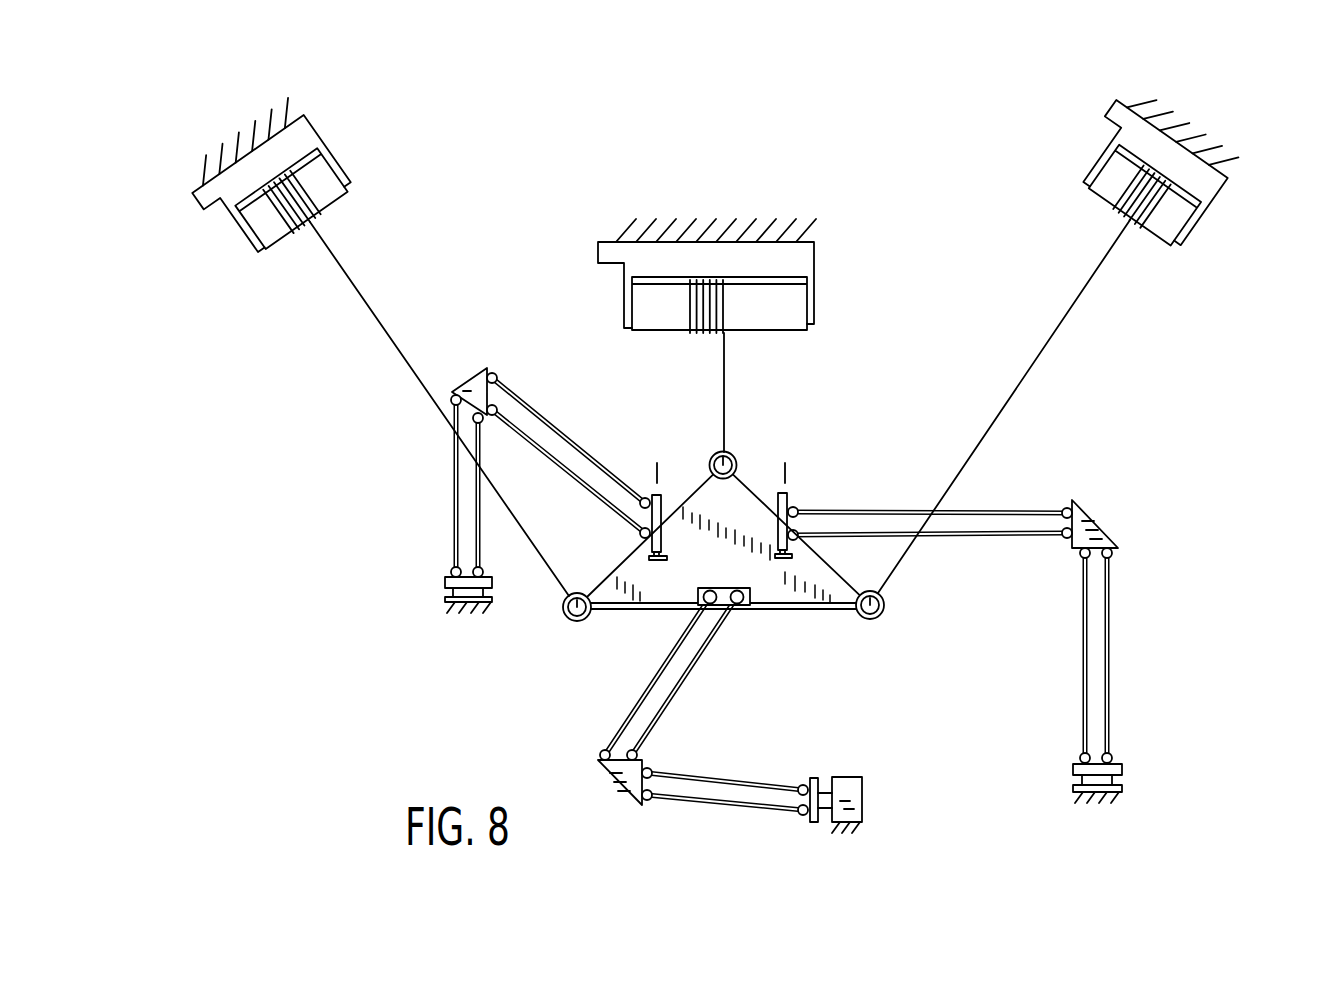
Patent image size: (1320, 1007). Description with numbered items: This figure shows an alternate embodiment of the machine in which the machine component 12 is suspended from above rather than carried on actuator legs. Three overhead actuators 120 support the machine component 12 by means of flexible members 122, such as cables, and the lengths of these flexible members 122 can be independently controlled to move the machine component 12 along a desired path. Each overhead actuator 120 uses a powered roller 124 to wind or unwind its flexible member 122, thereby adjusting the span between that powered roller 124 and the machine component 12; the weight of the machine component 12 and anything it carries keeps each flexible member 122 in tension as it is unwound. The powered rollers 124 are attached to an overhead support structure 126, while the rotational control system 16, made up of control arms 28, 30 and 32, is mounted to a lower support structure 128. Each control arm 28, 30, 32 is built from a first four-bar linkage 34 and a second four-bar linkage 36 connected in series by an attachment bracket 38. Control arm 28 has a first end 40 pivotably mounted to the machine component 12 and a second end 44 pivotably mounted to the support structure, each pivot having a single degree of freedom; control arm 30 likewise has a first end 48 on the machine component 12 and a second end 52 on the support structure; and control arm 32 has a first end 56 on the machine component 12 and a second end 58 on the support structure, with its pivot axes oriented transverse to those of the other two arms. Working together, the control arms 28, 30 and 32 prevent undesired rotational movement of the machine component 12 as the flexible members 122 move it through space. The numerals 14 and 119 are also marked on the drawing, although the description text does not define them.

The machine component 12 is at (795, 604).
The first leg assembly 14 is at (265, 311).
The rotational control system 16 is at (1162, 565).
The control arm 28 is at (1110, 490).
The control arm 30 is at (541, 380).
The control arm 32 is at (710, 828).
The first four-bar linkage 34 is at (455, 500).
The second four-bar linkage 36 is at (570, 440).
The attachment bracket 38 is at (468, 370).
The first end 40 is at (790, 493).
The second end 44 is at (1123, 767).
The first end 48 is at (666, 495).
The second end 52 is at (442, 592).
The first end 56 is at (728, 610).
The second end 58 is at (814, 777).
The parallel mechanism 119 is at (321, 490).
The overhead actuator 120 is at (362, 152).
The flexible member 122 is at (365, 297).
The powered roller 124 is at (355, 178).
The overhead support structure 126 is at (726, 131).
The lower support structure 128 is at (1242, 784).